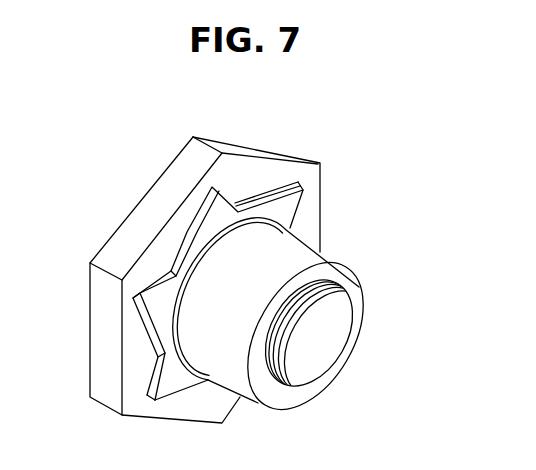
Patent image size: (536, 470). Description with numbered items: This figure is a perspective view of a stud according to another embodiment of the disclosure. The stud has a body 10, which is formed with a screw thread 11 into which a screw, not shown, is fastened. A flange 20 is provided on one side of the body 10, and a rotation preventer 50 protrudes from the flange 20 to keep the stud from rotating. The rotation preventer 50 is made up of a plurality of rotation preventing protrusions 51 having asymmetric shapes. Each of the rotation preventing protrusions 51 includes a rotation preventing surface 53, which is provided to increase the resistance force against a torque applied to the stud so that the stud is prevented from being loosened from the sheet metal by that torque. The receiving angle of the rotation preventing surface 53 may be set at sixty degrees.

The body 10 is at (296, 250).
The screw thread 11 is at (348, 318).
The flange 20 is at (270, 172).
The rotation preventer 50 is at (306, 208).
The rotation preventing protrusion 51 is at (308, 190).
The rotation preventing surface 53 is at (238, 198).